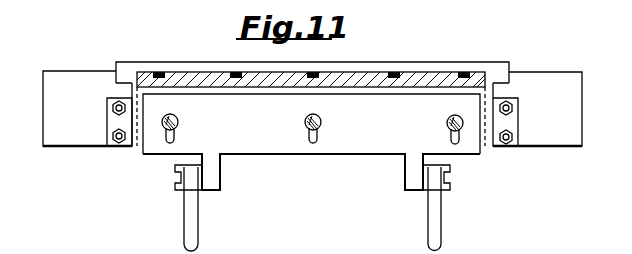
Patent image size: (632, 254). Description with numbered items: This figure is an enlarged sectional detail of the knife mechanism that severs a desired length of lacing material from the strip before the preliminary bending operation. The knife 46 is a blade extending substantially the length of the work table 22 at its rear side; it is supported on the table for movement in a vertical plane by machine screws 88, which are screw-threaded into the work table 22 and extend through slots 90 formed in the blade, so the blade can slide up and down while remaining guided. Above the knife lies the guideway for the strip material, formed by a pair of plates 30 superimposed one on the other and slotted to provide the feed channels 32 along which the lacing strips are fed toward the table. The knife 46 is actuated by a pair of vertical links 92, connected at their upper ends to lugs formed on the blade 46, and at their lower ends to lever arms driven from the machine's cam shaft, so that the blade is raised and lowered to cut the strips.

The work table 22 is at (67, 81).
The plates 30 is at (180, 80).
The feed channels 32 is at (462, 72).
The knife 46 is at (263, 151).
The machine screws 88 is at (177, 117).
The slots 90 is at (177, 131).
The vertical links 92 is at (192, 224).